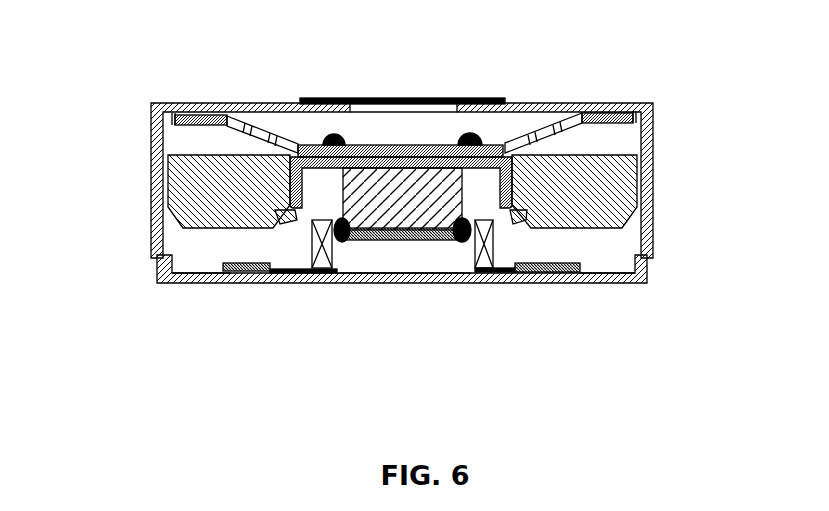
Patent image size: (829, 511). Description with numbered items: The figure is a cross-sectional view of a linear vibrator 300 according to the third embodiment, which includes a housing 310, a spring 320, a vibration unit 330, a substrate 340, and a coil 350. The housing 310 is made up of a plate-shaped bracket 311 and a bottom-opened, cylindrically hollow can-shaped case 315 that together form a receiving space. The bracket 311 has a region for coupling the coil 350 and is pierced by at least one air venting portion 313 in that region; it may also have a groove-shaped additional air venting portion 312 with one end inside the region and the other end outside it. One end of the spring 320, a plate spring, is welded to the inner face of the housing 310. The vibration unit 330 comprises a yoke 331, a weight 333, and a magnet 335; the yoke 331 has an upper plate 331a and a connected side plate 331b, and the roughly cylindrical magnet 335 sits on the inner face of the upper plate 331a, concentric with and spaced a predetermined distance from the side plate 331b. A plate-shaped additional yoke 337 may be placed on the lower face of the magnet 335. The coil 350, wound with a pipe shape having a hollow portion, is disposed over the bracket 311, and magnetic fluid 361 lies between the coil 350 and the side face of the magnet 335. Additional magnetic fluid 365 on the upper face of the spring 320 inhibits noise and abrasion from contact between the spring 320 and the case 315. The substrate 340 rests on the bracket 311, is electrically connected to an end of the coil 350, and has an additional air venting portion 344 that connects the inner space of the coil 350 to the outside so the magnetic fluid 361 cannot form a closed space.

The linear vibrator 300 is at (672, 110).
The housing 310 is at (78, 181).
The bracket 311 is at (152, 260).
The additional air venting portion 312 is at (215, 282).
The air venting portion 313 is at (402, 278).
The case 315 is at (152, 200).
The spring 320 is at (313, 143).
The vibration unit 330 is at (378, 355).
The yoke 331 is at (293, 253).
The upper plate 331a is at (397, 157).
The side plate 331b is at (282, 158).
The weight 333 is at (247, 200).
The magnet 335 is at (395, 207).
The additional yoke 337 is at (353, 240).
The substrate 340 is at (583, 278).
The additional air venting portion 344 is at (490, 242).
The coil 350 is at (523, 273).
The magnetic fluid 361 is at (457, 242).
The additional magnetic fluid 365 is at (470, 133).